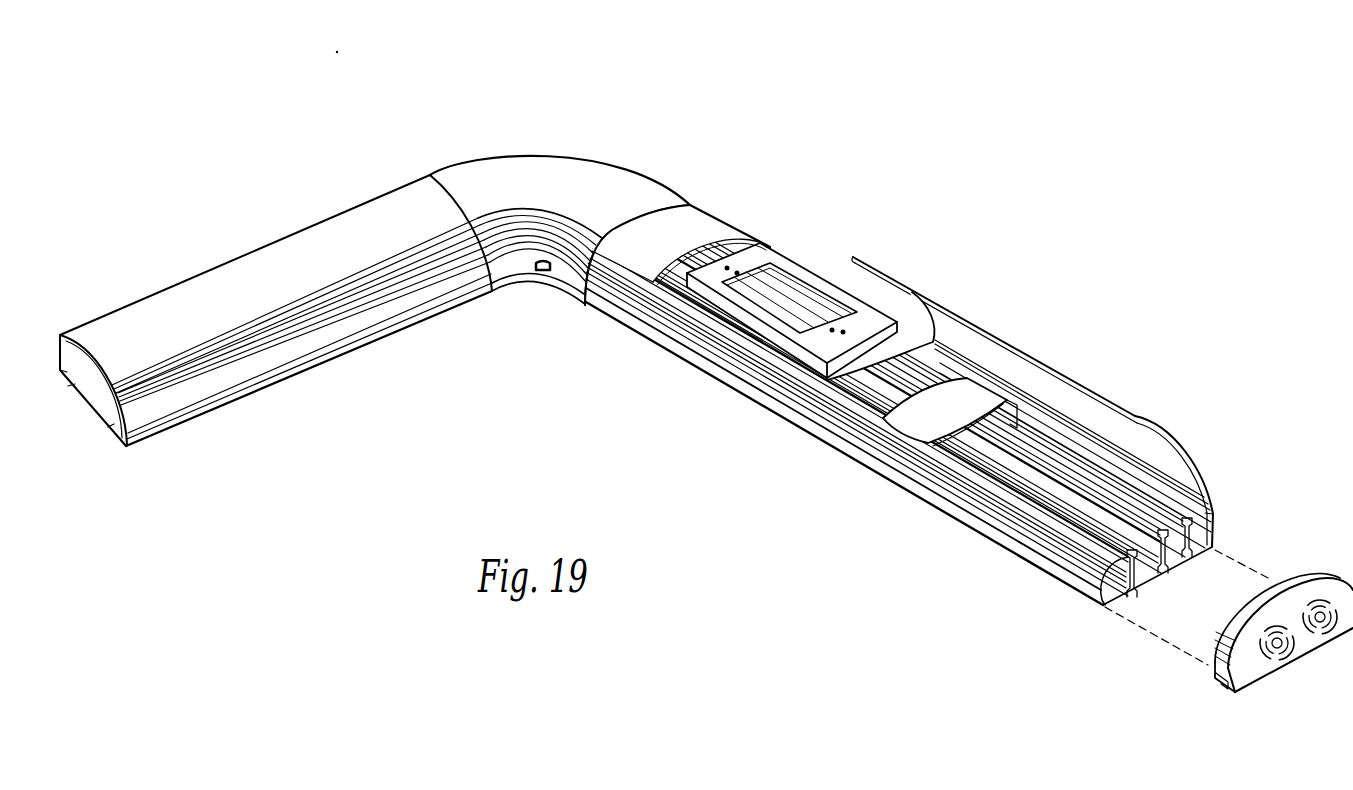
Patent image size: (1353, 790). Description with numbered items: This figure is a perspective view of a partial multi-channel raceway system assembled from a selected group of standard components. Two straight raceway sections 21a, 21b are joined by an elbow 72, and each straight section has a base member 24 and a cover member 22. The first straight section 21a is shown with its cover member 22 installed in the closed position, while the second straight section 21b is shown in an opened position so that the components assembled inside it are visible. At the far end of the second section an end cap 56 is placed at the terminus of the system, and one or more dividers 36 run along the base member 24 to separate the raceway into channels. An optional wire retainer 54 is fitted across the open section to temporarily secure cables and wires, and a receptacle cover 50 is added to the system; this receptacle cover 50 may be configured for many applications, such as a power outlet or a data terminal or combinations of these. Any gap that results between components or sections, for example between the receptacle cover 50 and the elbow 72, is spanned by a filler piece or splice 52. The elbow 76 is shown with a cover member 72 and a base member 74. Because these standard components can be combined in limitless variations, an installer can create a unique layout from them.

The straight raceway section 21a is at (304, 203).
The straight raceway section 21b is at (870, 508).
The cover member 22 is at (152, 325).
The base member 24 is at (273, 362).
The dividers 36 is at (1180, 514).
The receptacle cover 50 is at (828, 256).
The filler piece or splice 52 is at (707, 227).
The wire retainer 54 is at (950, 378).
The end cap 56 is at (1293, 587).
The elbow 72 is at (545, 133).
The base member 74 is at (560, 266).
The elbow 76 is at (488, 172).